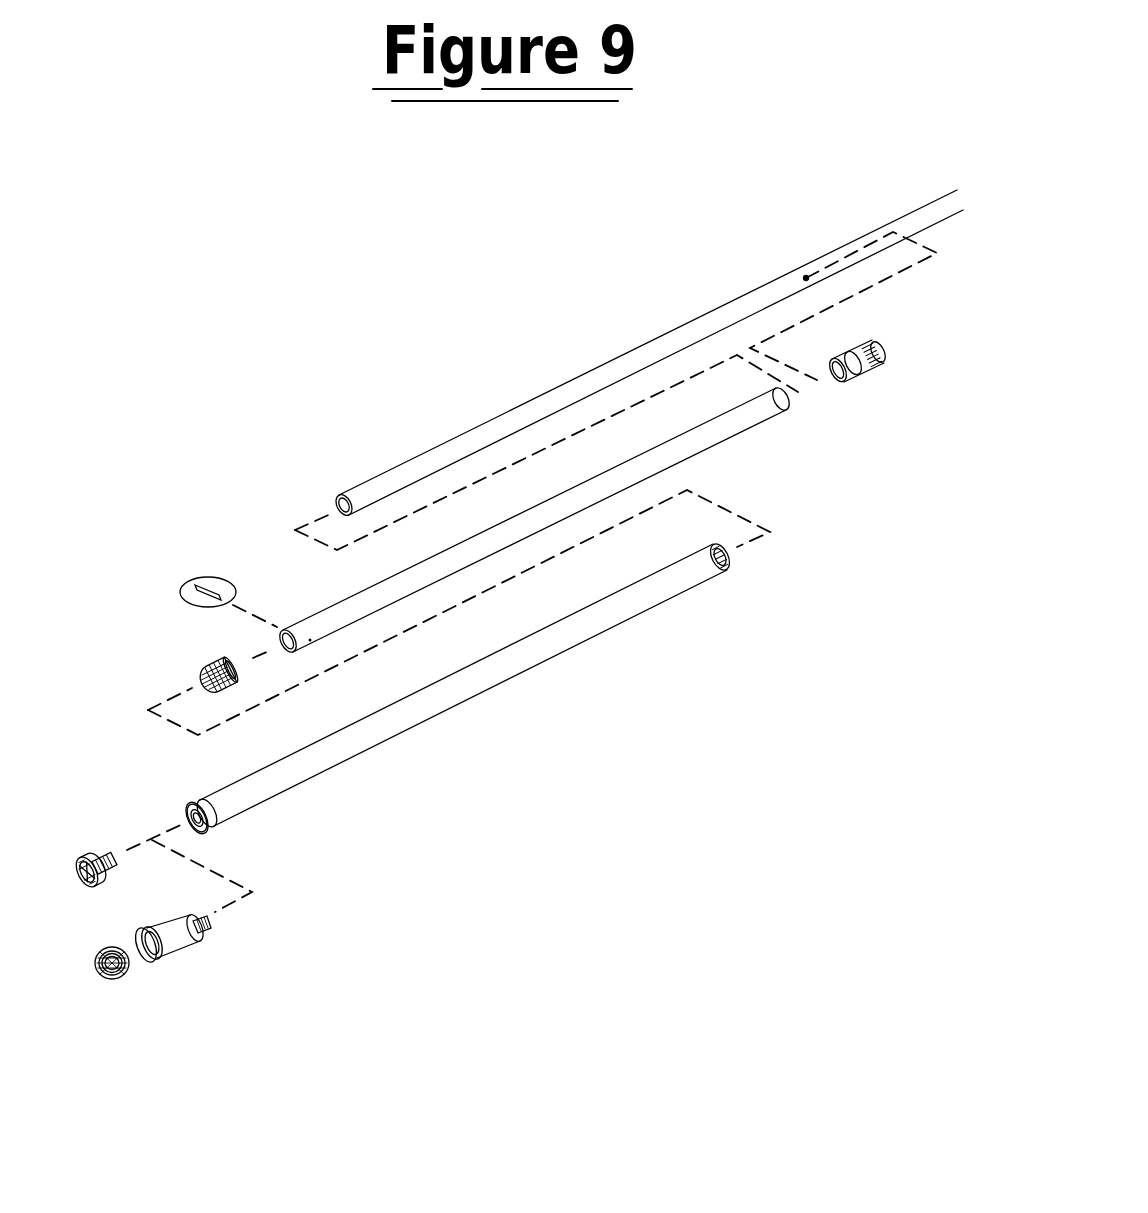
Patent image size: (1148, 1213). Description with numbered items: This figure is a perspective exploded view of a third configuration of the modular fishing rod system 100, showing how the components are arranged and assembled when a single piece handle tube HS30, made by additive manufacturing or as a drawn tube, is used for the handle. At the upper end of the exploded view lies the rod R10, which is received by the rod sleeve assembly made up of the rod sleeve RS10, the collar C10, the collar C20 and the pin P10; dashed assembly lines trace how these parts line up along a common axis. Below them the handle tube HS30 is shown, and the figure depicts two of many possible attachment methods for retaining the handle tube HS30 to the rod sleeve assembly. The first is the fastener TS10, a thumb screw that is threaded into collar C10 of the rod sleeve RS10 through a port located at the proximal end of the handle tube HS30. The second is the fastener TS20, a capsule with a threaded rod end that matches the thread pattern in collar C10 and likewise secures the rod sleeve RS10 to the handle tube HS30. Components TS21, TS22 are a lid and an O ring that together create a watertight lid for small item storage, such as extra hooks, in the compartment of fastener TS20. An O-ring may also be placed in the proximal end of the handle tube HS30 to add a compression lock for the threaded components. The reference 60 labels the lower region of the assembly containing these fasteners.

The modular fishing rod system 100 is at (316, 385).
The rod R10 is at (535, 385).
The collar C20 is at (858, 398).
The rod sleeve RS10 is at (753, 443).
The pin P10 is at (185, 568).
The collar C10 is at (188, 660).
The handle tube HS30 is at (647, 636).
The tail assembly 60 is at (638, 877).
The thumb screw fastener TS10 is at (92, 840).
The capsule fastener TS20 is at (205, 953).
The lid TS21 is at (105, 998).
The O ring TS22 is at (127, 977).